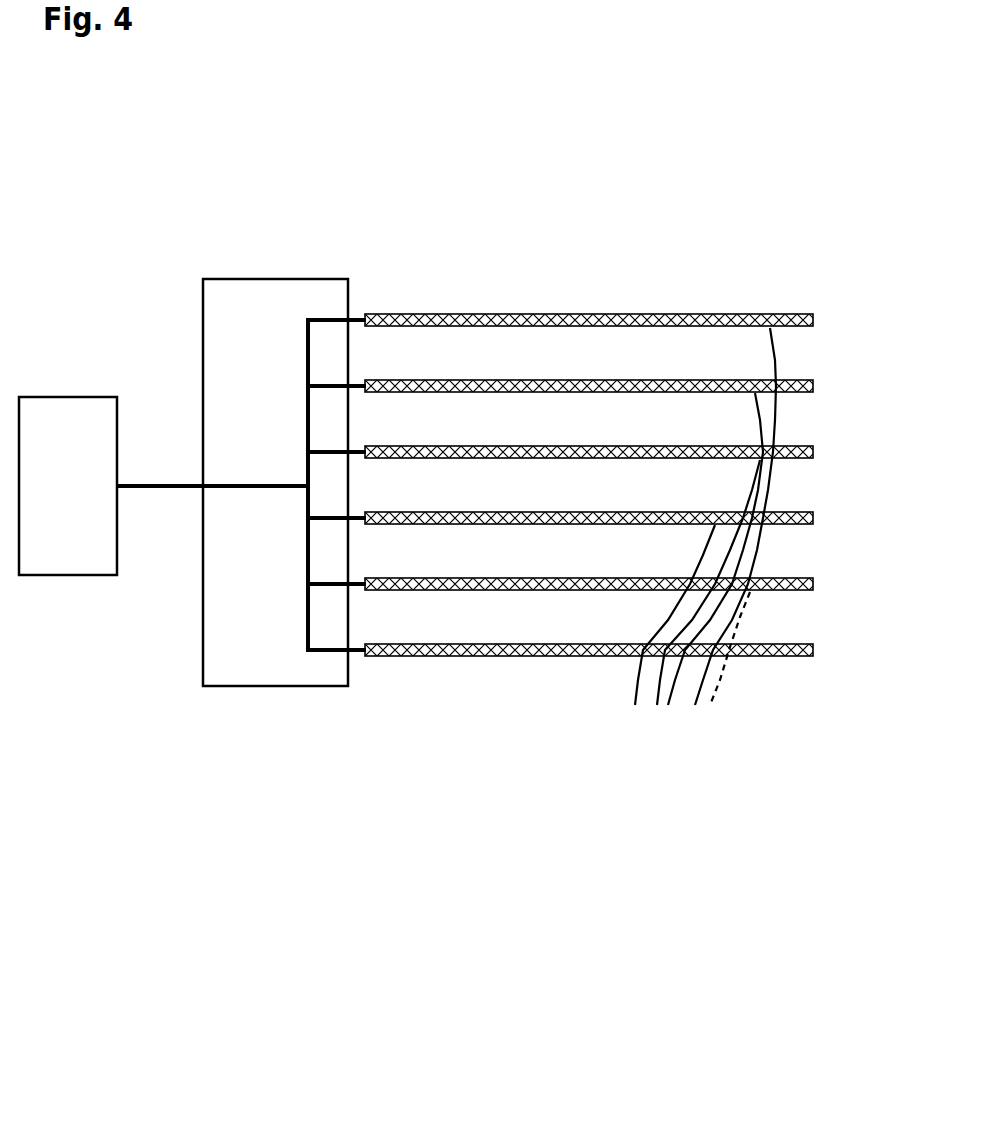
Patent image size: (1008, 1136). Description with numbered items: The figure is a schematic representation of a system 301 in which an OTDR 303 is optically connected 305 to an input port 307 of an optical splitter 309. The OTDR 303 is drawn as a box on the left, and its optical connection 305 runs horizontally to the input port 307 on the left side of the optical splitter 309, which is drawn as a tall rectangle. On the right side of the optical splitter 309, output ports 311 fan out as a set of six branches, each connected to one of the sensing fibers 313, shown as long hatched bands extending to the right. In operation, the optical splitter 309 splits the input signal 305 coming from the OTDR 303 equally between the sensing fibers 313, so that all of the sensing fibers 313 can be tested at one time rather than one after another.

The system 301 is at (319, 826).
The OTDR 303 is at (42, 577).
The optical connection 305 is at (145, 493).
The input port 307 is at (201, 484).
The optical splitter 309 is at (203, 302).
The output ports 311 is at (353, 443).
The sensing fibers 313 is at (703, 544).